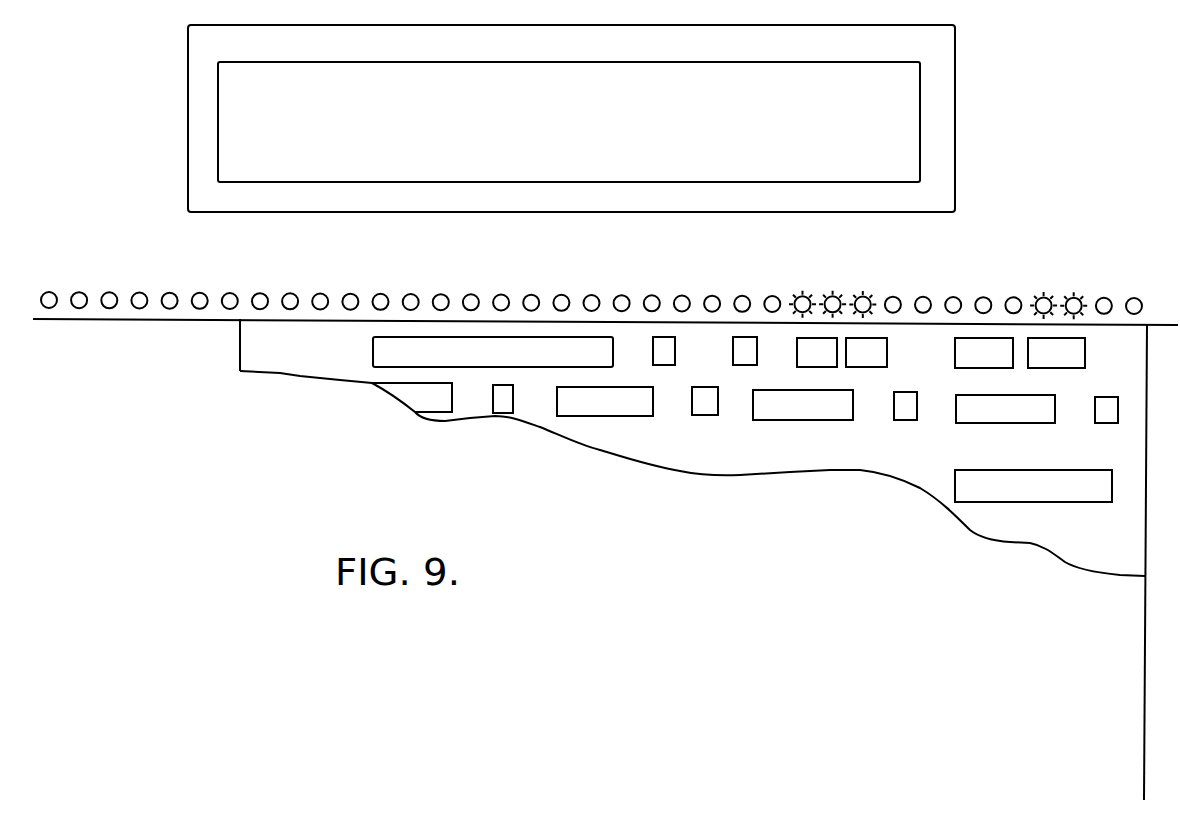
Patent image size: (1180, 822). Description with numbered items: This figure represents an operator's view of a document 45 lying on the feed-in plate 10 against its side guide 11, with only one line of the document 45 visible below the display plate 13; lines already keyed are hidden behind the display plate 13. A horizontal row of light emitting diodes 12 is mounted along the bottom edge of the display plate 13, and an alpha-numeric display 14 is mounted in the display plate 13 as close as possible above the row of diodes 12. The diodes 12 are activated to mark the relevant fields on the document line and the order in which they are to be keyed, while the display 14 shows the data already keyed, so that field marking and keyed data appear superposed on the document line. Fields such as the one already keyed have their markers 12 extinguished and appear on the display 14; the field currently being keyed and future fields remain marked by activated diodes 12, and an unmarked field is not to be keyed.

The alpha-numeric display 14 is at (937, 115).
The display plate 13 is at (576, 271).
The light emitting diodes 12 is at (1131, 299).
The feed-in plate 10 is at (605, 410).
The side guide 11 is at (1163, 531).
The document 45 is at (620, 453).